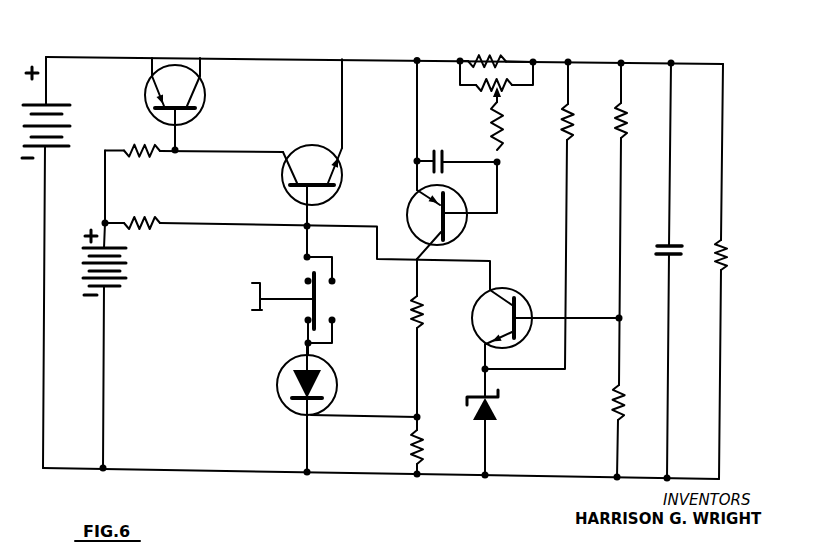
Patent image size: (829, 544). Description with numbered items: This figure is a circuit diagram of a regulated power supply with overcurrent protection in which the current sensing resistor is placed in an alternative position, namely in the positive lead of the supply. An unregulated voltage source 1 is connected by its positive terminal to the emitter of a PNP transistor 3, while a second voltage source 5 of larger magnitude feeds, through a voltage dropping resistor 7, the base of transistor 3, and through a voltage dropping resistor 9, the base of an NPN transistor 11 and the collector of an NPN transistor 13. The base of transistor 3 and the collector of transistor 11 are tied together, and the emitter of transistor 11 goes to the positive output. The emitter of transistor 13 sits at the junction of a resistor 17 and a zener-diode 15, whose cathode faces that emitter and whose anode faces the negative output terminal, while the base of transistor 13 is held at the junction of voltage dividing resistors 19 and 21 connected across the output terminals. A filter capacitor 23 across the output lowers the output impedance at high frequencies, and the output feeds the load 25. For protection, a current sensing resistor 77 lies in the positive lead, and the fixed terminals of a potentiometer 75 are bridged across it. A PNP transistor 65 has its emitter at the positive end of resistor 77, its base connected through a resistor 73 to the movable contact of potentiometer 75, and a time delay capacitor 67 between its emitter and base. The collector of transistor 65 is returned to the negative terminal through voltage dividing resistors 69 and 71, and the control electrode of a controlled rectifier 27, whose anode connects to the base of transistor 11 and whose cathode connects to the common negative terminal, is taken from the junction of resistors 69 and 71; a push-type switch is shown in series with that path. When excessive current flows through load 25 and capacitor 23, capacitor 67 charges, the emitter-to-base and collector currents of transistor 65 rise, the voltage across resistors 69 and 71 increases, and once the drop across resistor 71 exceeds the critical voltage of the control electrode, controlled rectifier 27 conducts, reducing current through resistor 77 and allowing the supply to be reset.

The unregulated voltage source 1 is at (58, 98).
The PNP transistor 3 is at (198, 100).
The voltage source 5 is at (126, 249).
The voltage dropping resistor 7 is at (143, 144).
The voltage dropping resistor 9 is at (152, 222).
The NPN transistor 11 is at (306, 148).
The NPN transistor 13 is at (503, 293).
The zener-diode 15 is at (498, 408).
The resistor 17 is at (571, 125).
The voltage dividing resistor 19 is at (622, 113).
The voltage dividing resistor 21 is at (624, 396).
The filter capacitor 23 is at (673, 244).
The load resistor 25 is at (723, 242).
The controlled rectifier 27 is at (326, 380).
The PNP transistor 65 is at (421, 204).
The time delay capacitor 67 is at (437, 150).
The voltage dividing resistor 69 is at (421, 306).
The voltage dividing resistor 71 is at (421, 447).
The resistor 73 is at (501, 126).
The potentiometer 75 is at (481, 89).
The current sensing resistor 77 is at (488, 57).